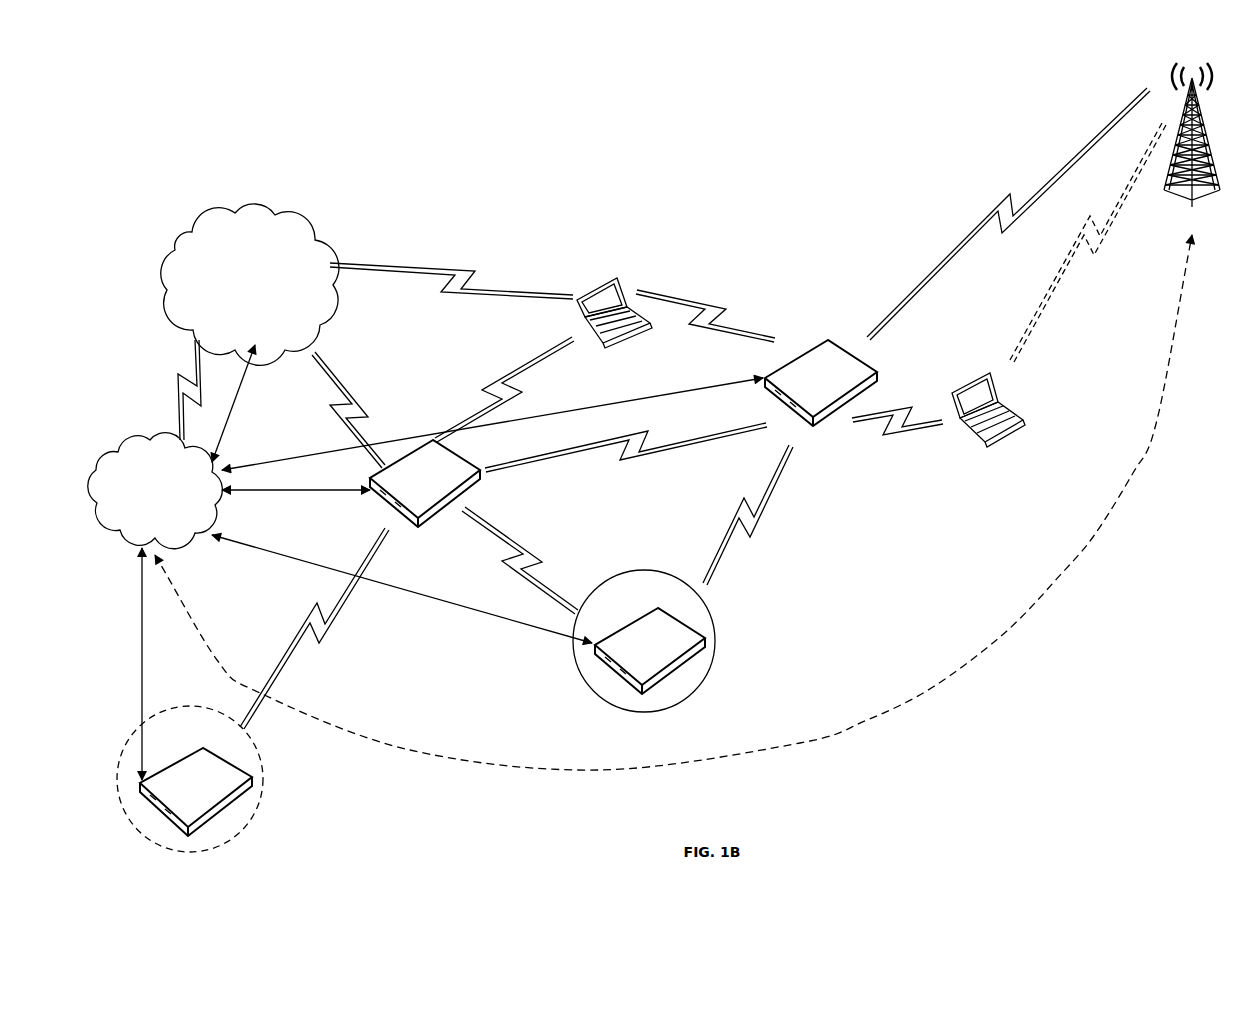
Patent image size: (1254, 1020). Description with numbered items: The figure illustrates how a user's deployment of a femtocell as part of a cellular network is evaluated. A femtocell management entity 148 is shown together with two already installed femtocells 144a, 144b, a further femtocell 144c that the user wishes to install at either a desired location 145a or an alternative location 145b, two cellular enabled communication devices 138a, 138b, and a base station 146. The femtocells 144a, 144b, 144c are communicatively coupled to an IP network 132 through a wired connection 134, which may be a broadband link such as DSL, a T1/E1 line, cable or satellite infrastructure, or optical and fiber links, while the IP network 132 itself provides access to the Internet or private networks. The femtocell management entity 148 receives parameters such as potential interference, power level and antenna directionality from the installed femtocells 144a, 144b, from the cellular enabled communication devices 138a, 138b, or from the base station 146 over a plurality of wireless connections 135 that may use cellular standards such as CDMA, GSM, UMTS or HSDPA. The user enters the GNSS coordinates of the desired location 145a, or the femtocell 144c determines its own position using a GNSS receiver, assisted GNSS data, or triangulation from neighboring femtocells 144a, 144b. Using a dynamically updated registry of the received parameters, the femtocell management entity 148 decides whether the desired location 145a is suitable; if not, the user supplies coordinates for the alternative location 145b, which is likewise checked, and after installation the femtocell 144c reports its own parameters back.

The IP network 132 is at (148, 440).
The wired connection 134 is at (240, 392).
The wireless connection 135 is at (412, 262).
The cellular enabled communication device 138a is at (605, 346).
The cellular enabled communication device 138b is at (1005, 440).
The femtocell 144a is at (408, 452).
The femtocell 144b is at (815, 345).
The femtocell 144c is at (630, 622).
The desired location 145a is at (650, 570).
The alternative location 145b is at (200, 707).
The base station 146 is at (1205, 120).
The femtocell management entity 148 is at (252, 213).